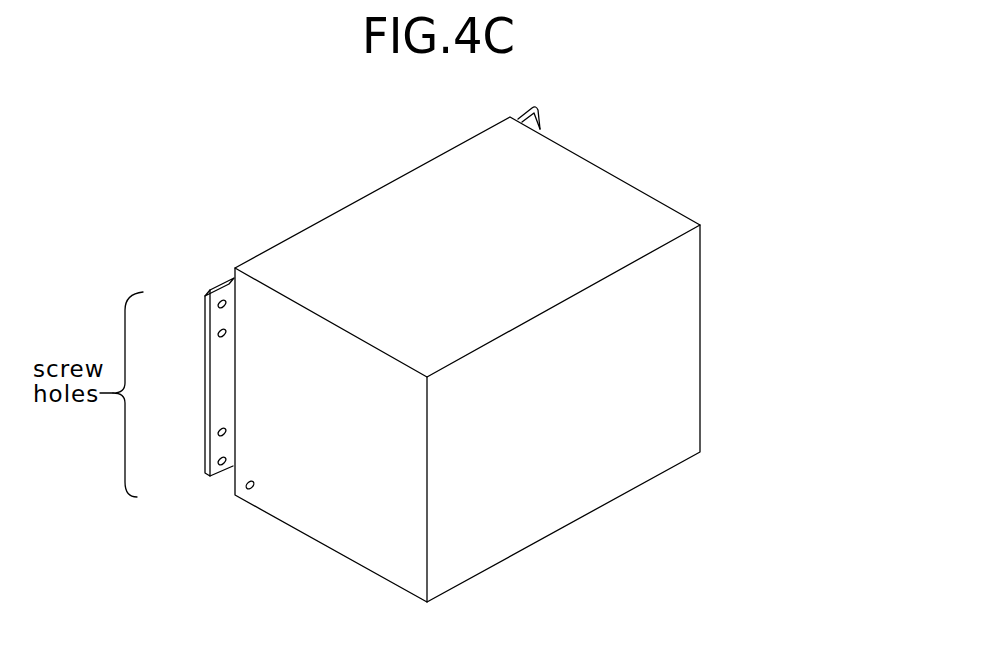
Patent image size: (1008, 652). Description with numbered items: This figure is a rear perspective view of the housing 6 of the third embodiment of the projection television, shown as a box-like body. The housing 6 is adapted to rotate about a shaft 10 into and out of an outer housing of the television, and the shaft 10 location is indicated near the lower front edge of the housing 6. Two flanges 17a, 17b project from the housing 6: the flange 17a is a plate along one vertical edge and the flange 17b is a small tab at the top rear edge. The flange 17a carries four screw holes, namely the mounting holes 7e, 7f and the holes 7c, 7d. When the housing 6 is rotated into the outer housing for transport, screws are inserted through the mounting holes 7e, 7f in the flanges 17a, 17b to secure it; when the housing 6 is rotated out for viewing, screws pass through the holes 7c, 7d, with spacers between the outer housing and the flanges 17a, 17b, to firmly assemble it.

The housing 6 is at (627, 208).
The flange 17a is at (208, 294).
The flange 17b is at (539, 125).
The hole 7c is at (218, 306).
The mounting hole 7e is at (218, 335).
The mounting hole 7f is at (218, 433).
The hole 7d is at (218, 462).
The shaft 10 is at (254, 481).